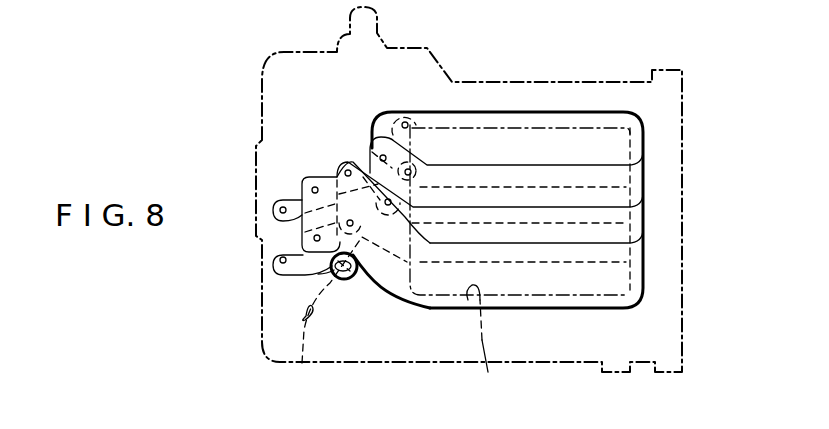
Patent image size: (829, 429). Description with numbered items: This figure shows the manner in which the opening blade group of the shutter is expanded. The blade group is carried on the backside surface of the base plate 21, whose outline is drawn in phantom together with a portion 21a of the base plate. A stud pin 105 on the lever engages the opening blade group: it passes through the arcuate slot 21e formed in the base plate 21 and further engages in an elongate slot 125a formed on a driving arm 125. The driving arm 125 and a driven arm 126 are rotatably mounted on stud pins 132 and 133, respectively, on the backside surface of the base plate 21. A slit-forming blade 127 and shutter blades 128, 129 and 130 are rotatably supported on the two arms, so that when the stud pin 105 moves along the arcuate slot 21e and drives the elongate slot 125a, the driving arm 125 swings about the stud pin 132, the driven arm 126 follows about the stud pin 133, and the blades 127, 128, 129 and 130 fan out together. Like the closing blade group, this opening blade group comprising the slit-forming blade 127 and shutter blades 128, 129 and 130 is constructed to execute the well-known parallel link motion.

The base plate 21 is at (402, 46).
The frame hook portion 21a is at (491, 342).
The arcuate slot 21e is at (347, 318).
The stud pin 105 is at (342, 282).
The driving arm 125 is at (292, 237).
The elongate slot 125a is at (326, 276).
The driven arm 126 is at (300, 203).
The slit-forming blade 127 is at (640, 143).
The shutter blade 128 is at (645, 185).
The shutter blade 129 is at (645, 219).
The shutter blade 130 is at (636, 288).
The stud pin 132 is at (274, 209).
The stud pin 133 is at (274, 262).